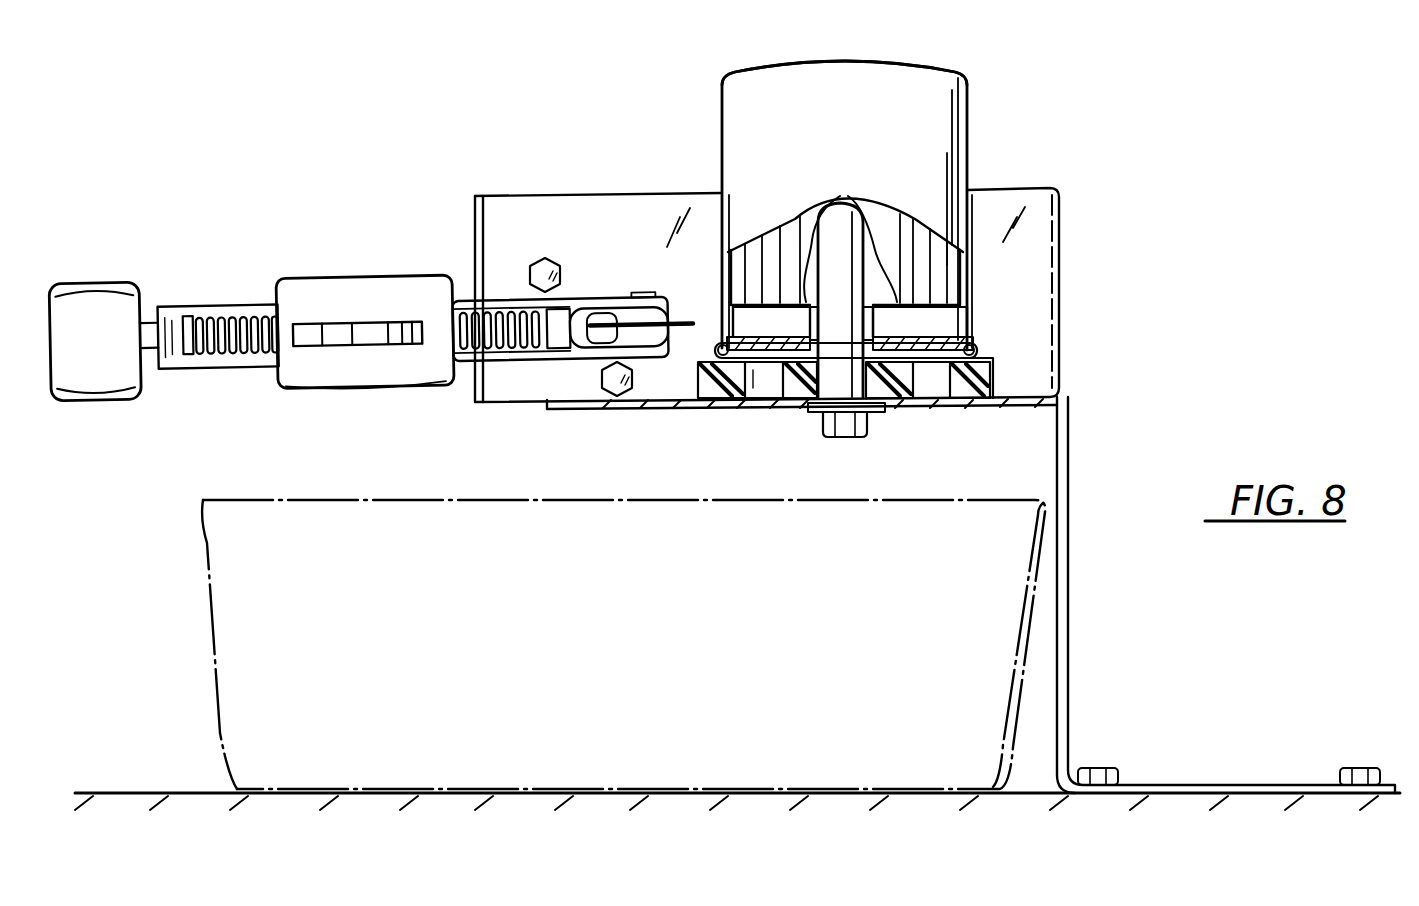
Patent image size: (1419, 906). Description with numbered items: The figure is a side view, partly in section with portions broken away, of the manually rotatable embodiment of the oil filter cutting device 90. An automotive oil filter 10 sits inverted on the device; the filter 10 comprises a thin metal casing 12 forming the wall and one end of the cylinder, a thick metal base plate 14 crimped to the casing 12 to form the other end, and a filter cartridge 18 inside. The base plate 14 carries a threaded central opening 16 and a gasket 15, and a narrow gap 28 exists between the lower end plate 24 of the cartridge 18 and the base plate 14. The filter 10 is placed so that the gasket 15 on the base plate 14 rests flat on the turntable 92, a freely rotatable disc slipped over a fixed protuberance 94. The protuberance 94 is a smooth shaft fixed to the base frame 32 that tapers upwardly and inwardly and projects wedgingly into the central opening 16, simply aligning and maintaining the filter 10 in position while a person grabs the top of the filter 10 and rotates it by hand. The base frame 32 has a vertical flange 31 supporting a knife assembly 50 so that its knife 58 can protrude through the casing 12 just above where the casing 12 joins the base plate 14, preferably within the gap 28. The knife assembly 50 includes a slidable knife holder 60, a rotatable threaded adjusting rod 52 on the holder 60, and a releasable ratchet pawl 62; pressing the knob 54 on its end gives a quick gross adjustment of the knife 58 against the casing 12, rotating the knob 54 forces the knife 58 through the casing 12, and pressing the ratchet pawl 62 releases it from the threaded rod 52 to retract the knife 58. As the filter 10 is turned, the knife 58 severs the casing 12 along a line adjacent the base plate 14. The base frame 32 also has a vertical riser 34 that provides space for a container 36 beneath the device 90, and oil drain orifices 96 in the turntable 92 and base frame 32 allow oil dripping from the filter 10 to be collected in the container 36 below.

The oil filter 10 is at (952, 5).
The casing 12 is at (722, 117).
The base plate 14 is at (882, 328).
The gasket 15 is at (967, 347).
The central opening 16 is at (882, 322).
The filter cartridge 18 is at (945, 265).
The lower end plate 24 is at (950, 293).
The gap 28 is at (728, 327).
The vertical flange 31 is at (540, 168).
The base frame 32 is at (623, 410).
The vertical riser 34 is at (1068, 445).
The container 36 is at (1000, 469).
The knife assembly 50 is at (313, 278).
The threaded adjusting rod 52 is at (233, 348).
The knob 54 is at (88, 287).
The knife 58 is at (678, 317).
The knife holder 60 is at (222, 273).
The ratchet pawl 62 is at (337, 343).
The manually rotatable device 90 is at (1100, 300).
The turntable 92 is at (993, 378).
The protuberance 94 is at (847, 208).
The oil drain orifices 96 is at (772, 393).